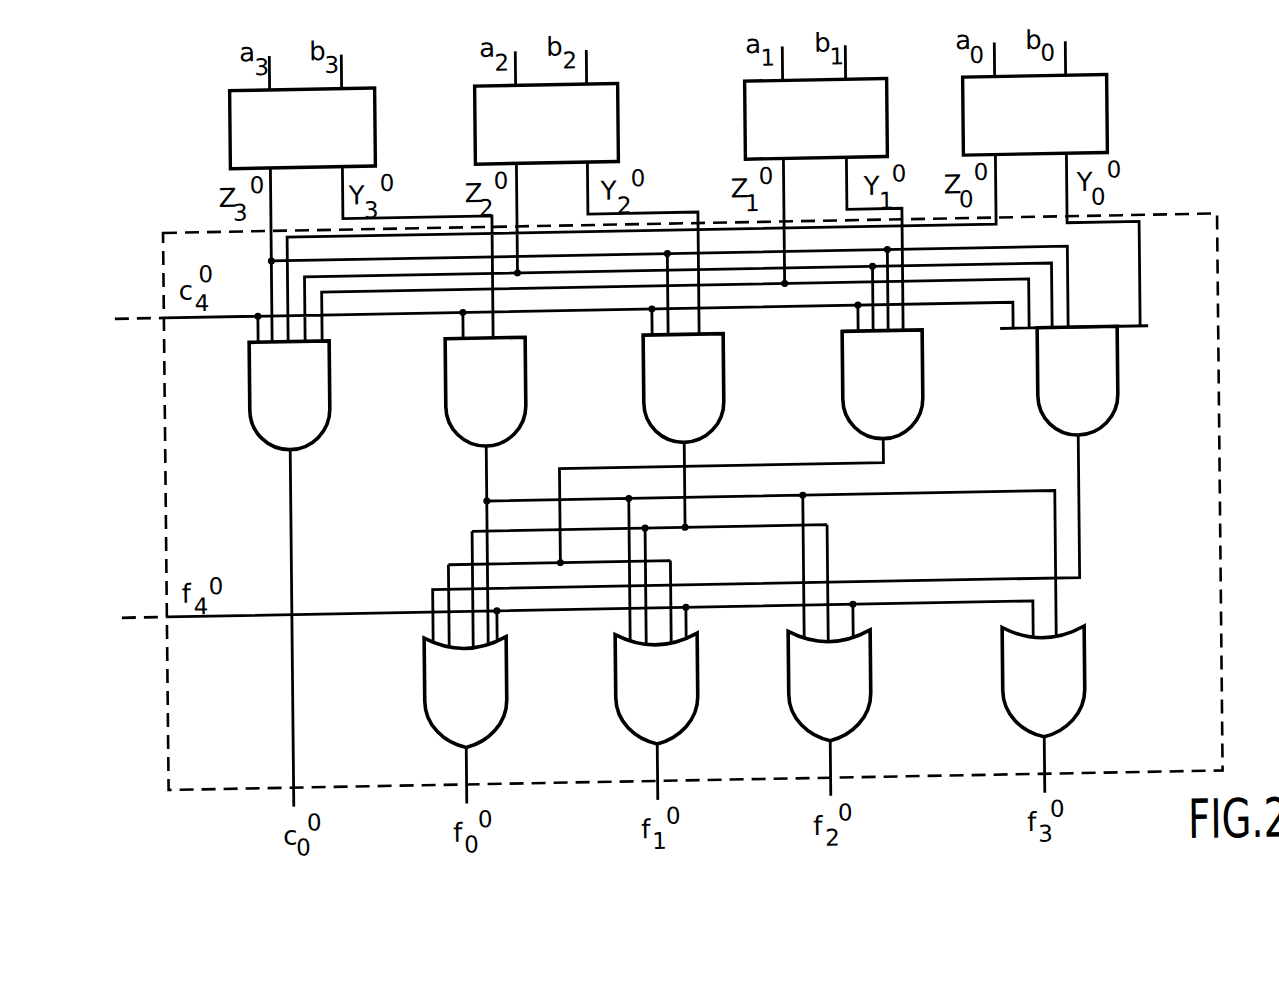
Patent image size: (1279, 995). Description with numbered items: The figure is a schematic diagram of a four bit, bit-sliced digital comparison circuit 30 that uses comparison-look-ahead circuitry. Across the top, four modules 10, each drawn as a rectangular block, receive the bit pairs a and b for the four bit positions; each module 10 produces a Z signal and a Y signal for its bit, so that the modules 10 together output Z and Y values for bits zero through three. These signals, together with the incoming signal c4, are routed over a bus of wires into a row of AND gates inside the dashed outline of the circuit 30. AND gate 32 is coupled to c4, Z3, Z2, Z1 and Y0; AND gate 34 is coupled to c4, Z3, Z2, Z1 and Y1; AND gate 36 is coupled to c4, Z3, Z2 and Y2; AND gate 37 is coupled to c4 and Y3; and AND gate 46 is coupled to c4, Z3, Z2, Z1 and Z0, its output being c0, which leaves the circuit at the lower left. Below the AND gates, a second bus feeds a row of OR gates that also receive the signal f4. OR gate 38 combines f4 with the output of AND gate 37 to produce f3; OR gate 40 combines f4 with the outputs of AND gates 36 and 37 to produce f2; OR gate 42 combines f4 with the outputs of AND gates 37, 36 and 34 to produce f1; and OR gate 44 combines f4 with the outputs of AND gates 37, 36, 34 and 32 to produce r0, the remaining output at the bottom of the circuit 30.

The module 10 is at (231, 138).
The four bit, bit-sliced circuit 30 is at (595, 792).
The AND gate 32 is at (1116, 416).
The AND gate 34 is at (921, 416).
The AND gate 36 is at (722, 416).
The AND gate 37 is at (524, 416).
The AND gate 46 is at (328, 416).
The OR gate 38 is at (1080, 724).
The OR gate 40 is at (866, 724).
The OR gate 42 is at (693, 724).
The OR gate 44 is at (502, 724).